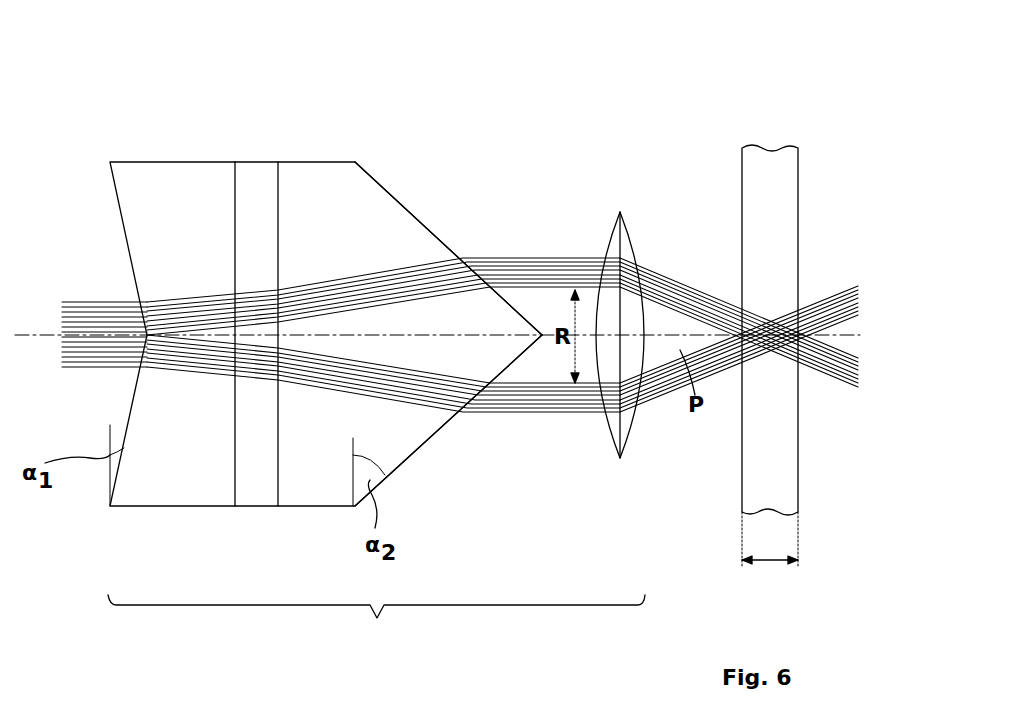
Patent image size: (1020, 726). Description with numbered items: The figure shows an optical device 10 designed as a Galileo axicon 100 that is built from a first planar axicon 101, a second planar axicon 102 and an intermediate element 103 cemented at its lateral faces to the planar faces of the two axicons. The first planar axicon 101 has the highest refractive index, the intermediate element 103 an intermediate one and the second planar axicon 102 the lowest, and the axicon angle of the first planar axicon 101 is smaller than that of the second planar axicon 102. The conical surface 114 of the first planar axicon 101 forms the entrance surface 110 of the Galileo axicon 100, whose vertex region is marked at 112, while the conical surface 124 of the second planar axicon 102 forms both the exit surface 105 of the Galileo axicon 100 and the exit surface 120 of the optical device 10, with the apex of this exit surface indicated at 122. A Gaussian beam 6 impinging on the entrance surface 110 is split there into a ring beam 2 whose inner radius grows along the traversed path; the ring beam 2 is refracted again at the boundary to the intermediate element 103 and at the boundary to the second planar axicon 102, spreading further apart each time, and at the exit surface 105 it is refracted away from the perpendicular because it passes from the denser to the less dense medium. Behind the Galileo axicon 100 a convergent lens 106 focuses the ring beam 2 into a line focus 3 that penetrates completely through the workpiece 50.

The optical device 10 is at (377, 624).
The Galileo axicon 100 is at (537, 157).
The entrance surface 110 is at (110, 195).
The first planar axicon 101 is at (195, 480).
The second planar axicon 102 is at (305, 485).
The intermediate element 103 is at (255, 178).
The exit surface 105 is at (418, 215).
The conical surface 124 is at (450, 420).
The apex of prism 122 is at (543, 310).
The entrance face vertex 112 is at (150, 345).
The conical surface 114 is at (130, 400).
The Gaussian beam 6 is at (98, 312).
The ring beam 2 is at (370, 280).
The convergent lens 106 is at (630, 248).
The exit surface 120 is at (638, 418).
The workpiece 50 is at (760, 190).
The line focus 3 is at (785, 318).